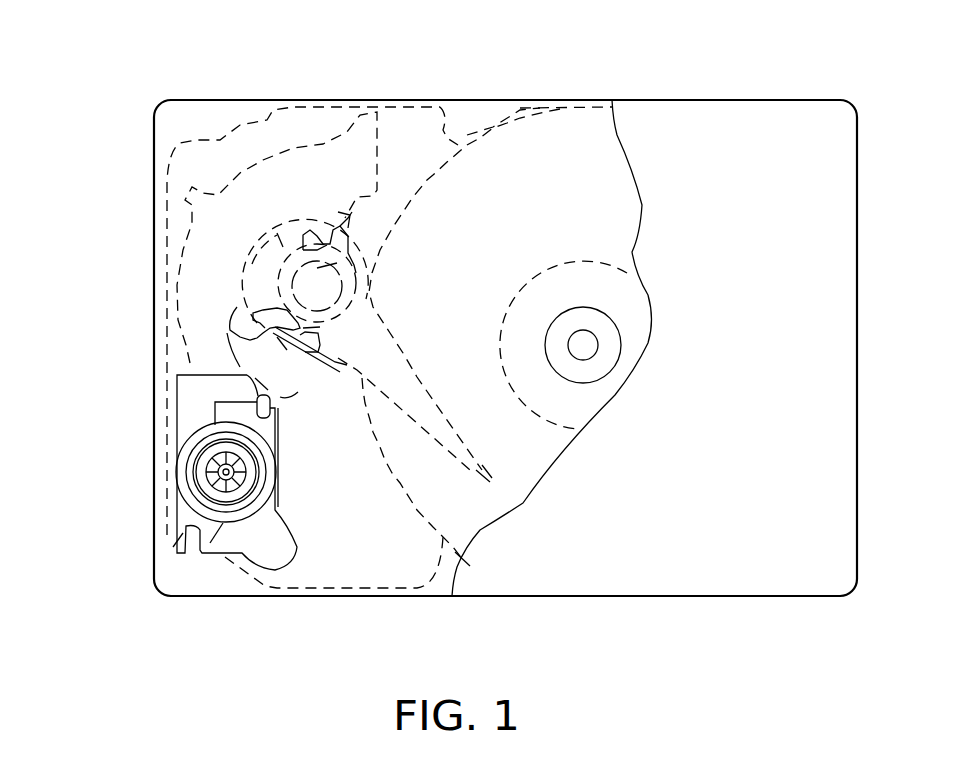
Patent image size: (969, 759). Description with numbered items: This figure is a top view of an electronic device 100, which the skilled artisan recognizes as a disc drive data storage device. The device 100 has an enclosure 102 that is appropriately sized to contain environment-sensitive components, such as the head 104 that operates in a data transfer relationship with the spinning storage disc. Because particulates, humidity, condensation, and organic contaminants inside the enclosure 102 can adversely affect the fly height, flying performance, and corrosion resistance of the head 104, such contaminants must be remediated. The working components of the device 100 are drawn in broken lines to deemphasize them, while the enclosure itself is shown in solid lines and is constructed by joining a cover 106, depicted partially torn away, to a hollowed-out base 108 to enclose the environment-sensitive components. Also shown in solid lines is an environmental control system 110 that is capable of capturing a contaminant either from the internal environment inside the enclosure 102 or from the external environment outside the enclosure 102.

The electronic device 100 is at (442, 340).
The enclosure 102 is at (493, 577).
The head 104 is at (480, 472).
The cover 106 is at (733, 585).
The base 108 is at (172, 596).
The environmental control system 110 is at (125, 418).